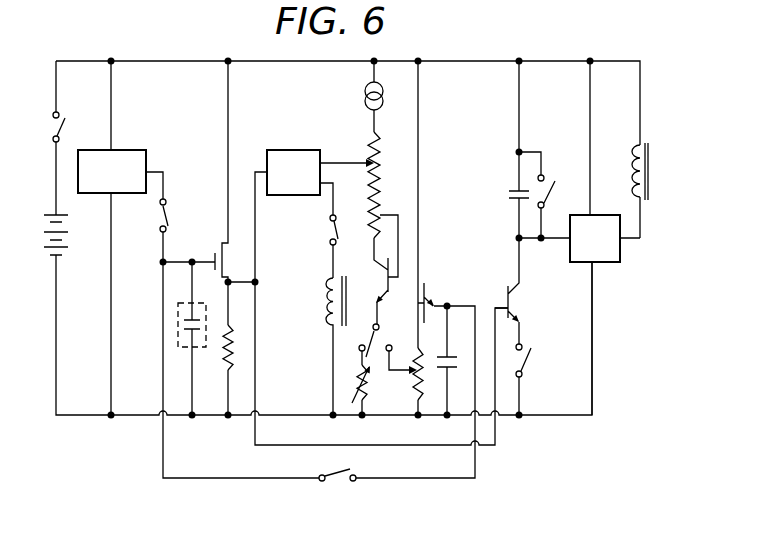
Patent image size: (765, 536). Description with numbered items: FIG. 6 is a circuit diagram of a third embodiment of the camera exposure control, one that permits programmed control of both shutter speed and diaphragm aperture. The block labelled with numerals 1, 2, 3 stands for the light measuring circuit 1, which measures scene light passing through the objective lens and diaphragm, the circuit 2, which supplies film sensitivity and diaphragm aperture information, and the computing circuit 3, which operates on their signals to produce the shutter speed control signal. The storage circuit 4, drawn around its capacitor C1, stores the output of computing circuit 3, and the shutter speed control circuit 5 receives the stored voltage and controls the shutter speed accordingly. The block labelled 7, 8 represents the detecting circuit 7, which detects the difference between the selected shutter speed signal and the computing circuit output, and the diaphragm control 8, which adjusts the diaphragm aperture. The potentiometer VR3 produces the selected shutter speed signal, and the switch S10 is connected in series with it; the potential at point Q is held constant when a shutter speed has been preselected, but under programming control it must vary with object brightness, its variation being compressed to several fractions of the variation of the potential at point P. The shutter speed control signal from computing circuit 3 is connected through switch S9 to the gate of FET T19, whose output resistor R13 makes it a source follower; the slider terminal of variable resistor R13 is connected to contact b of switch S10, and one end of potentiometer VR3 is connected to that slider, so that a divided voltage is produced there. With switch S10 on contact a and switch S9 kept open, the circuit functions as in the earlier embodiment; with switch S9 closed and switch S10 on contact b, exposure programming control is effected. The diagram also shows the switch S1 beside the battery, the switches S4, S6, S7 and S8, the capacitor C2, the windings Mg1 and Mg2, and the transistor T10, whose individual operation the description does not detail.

The power switch S1 is at (67, 123).
The light measuring circuit 1 is at (112, 238).
The circuit 2 is at (112, 238).
The computing circuit 3 is at (112, 238).
The switch S4 is at (170, 212).
The point P is at (233, 272).
The storage circuit 4 is at (168, 338).
The capacitor C1 is at (191, 348).
The detecting circuit 7 is at (381, 297).
The diaphragm control 8 is at (381, 297).
The switch S8 is at (326, 230).
The electromagnet Mg1 is at (328, 308).
The point Q is at (366, 111).
The potentiometer VR3 is at (380, 194).
The switch S10 is at (378, 326).
The contact a is at (359, 348).
The contact b is at (391, 345).
The variable resistor R13 is at (414, 373).
The FET T19 is at (436, 284).
The transistor T10 is at (505, 296).
The capacitor C2 is at (509, 189).
The switch S6 is at (552, 176).
The shutter speed control circuit 5 is at (605, 238).
The electromagnet Mg2 is at (649, 186).
The switch S7 is at (531, 358).
The switch S9 is at (338, 481).